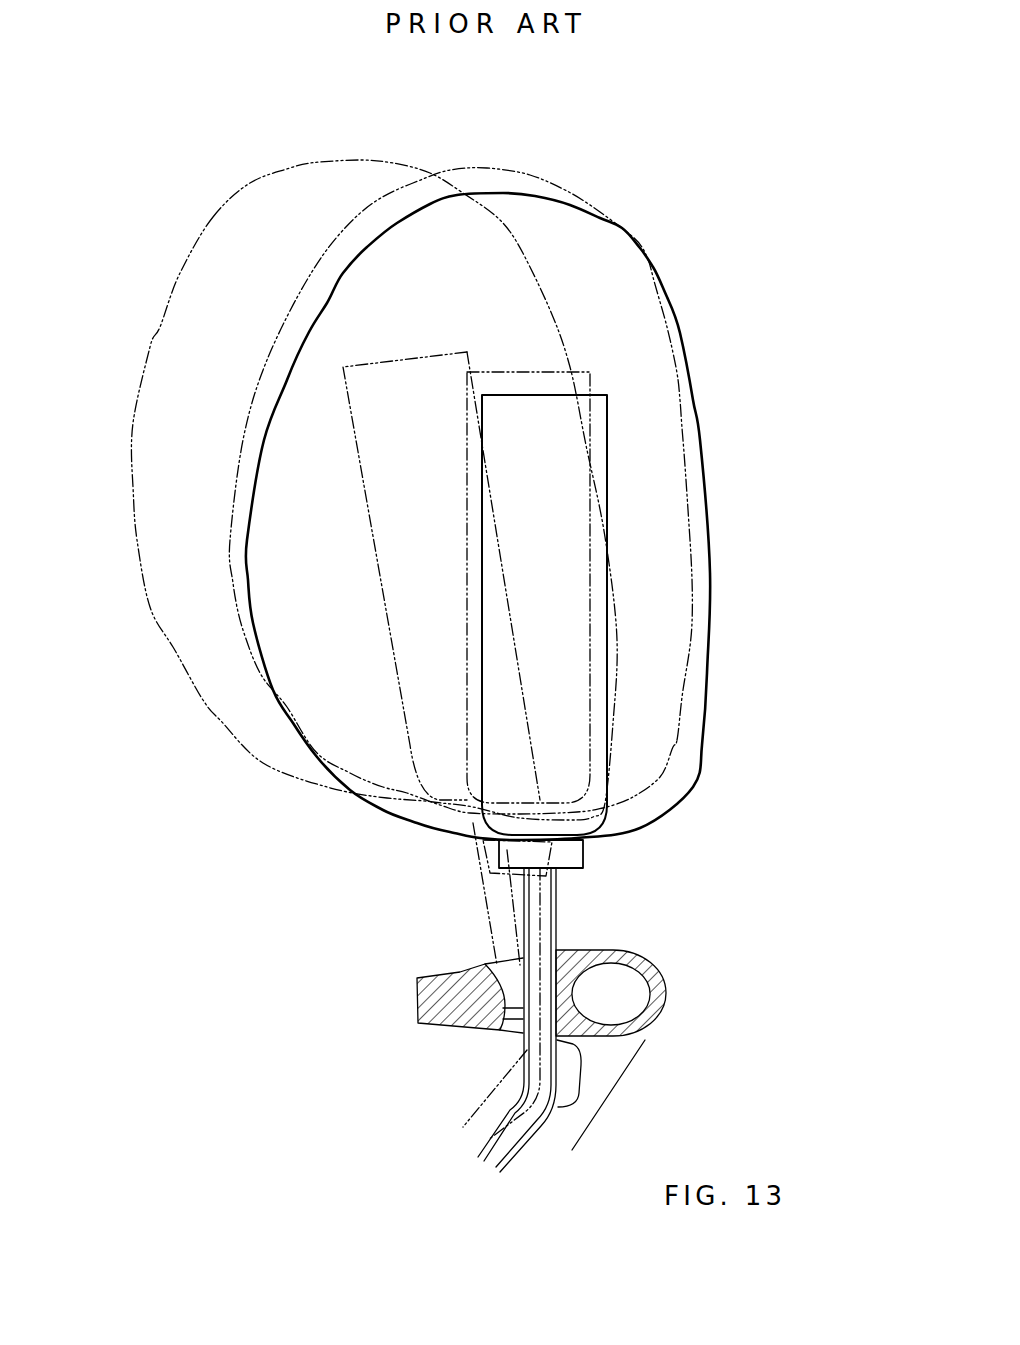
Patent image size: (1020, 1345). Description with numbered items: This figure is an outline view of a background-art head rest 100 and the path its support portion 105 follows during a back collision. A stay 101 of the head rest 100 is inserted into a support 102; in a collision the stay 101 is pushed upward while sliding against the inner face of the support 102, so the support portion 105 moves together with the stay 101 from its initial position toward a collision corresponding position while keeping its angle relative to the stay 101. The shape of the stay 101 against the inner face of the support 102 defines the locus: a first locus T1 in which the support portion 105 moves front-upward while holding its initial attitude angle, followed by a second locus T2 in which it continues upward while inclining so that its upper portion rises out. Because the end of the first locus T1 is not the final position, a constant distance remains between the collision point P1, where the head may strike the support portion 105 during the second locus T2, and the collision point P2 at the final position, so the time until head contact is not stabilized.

The head rest 100 is at (440, 516).
The support portion 105 is at (250, 575).
The stay 101 is at (548, 902).
The support 102 is at (417, 994).
The collision point P1 is at (268, 359).
The collision point P2 is at (152, 347).
The first locus T1 is at (493, 381).
The second locus T2 is at (487, 378).